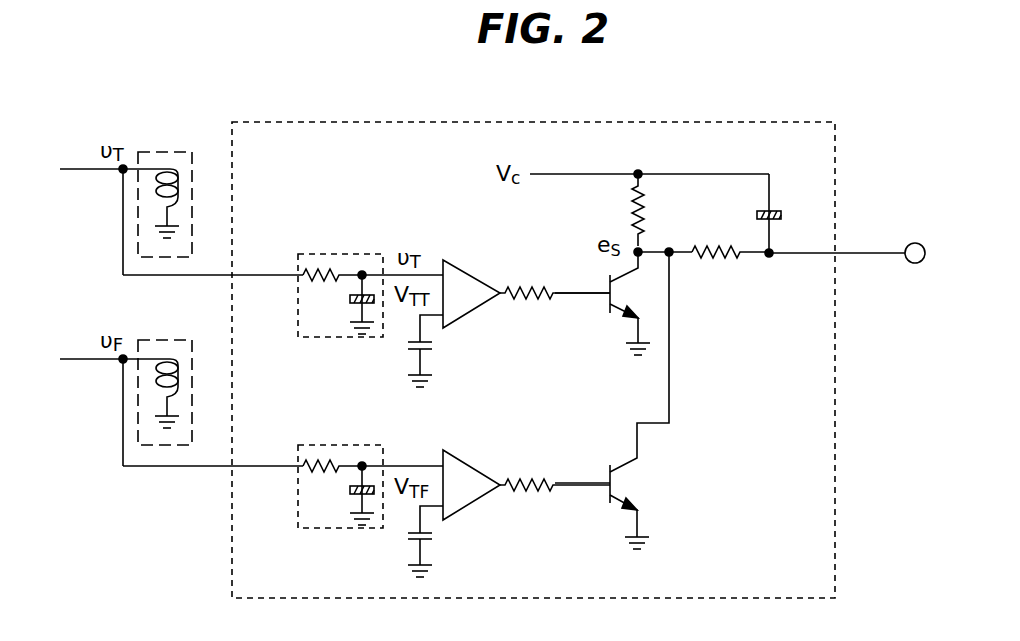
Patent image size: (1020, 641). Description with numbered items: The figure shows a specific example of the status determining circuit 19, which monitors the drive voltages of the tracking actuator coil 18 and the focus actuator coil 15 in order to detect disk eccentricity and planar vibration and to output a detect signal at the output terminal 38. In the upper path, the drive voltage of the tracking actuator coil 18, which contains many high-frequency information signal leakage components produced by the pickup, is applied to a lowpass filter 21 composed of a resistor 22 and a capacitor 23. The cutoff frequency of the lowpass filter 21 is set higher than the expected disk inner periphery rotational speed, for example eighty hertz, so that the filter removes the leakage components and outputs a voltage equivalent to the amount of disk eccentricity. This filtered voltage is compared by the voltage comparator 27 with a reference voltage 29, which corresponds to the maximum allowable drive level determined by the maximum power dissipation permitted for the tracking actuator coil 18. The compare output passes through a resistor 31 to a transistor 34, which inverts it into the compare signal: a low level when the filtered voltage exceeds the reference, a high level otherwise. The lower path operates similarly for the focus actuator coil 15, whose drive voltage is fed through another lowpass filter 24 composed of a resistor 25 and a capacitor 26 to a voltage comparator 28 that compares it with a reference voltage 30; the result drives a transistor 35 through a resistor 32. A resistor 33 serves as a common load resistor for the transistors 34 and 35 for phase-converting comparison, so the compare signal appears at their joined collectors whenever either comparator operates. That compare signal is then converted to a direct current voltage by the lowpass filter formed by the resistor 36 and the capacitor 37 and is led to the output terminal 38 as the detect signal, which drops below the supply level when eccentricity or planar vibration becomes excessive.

The focus actuator coil 15 is at (177, 340).
The tracking actuator coil 18 is at (177, 152).
The status determining circuit 19 is at (727, 122).
The lowpass filter 21 is at (352, 254).
The resistor 22 is at (327, 290).
The capacitor 23 is at (345, 312).
The lowpass filter 24 is at (352, 445).
The resistor 25 is at (327, 481).
The capacitor 26 is at (337, 505).
The voltage comparator 27 is at (470, 280).
The voltage comparator 28 is at (470, 470).
The reference voltage 29 is at (433, 350).
The reference voltage 30 is at (433, 545).
The resistor 31 is at (525, 287).
The resistor 32 is at (540, 477).
The resistor 33 is at (633, 215).
The transistor 34 is at (617, 318).
The transistor 35 is at (632, 480).
The resistor 36 is at (723, 270).
The capacitor 37 is at (782, 205).
The output terminal 38 is at (915, 263).